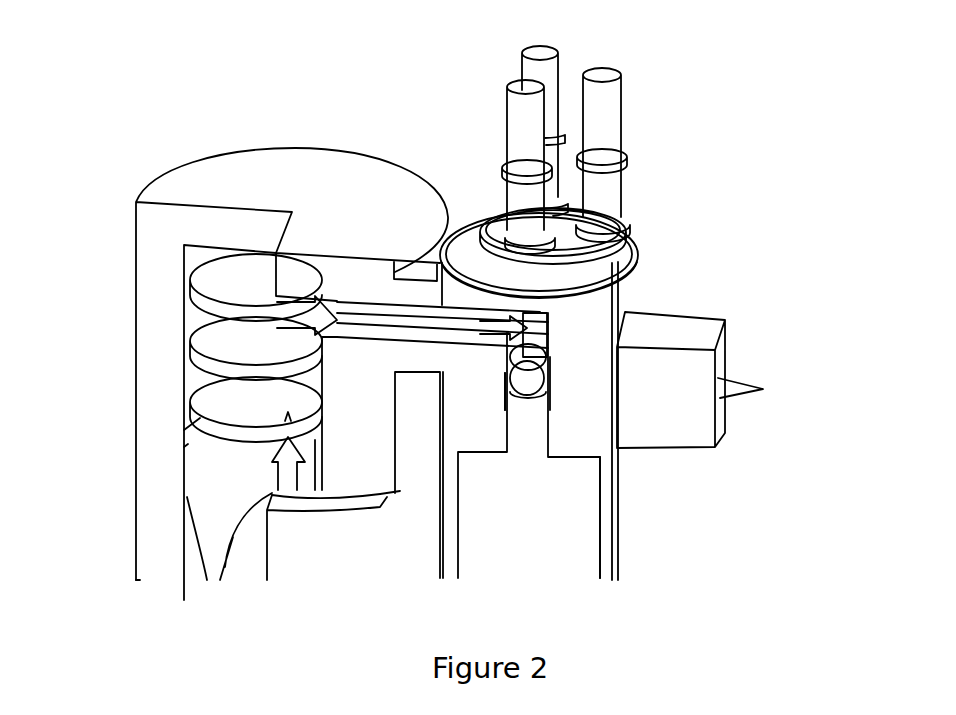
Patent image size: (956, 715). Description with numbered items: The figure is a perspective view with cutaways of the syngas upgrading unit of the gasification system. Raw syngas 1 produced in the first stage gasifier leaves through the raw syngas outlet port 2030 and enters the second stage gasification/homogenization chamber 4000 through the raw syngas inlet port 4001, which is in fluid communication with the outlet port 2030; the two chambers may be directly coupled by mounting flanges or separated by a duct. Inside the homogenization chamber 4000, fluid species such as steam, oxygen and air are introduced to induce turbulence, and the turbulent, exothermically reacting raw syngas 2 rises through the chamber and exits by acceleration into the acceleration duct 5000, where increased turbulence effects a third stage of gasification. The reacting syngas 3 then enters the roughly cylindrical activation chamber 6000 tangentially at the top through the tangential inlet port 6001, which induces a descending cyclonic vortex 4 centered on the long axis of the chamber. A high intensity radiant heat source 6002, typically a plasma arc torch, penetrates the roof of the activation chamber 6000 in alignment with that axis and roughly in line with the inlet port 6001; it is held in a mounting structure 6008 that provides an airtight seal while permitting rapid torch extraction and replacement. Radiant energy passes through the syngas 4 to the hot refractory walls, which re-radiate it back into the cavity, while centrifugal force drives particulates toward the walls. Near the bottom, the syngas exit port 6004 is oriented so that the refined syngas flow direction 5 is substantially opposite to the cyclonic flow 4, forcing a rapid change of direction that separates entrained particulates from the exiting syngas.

The raw syngas 1 is at (302, 459).
The turbulent and exothermically reacting raw syngas 2 is at (217, 434).
The reacting syngas 3 is at (382, 310).
The descending vortex 4 is at (505, 359).
The gas flow direction of refined syngas 5 is at (549, 388).
The raw syngas outlet port 2030 is at (180, 447).
The second stage gasification/homogenization chamber 4000 is at (134, 292).
The raw syngas inlet port 4001 is at (180, 432).
The acceleration duct 5000 is at (378, 343).
The activation chamber 6000 is at (527, 429).
The tangential inlet port 6001 is at (507, 341).
The high intensity radiant heat source 6002 is at (520, 324).
The syngas exit port 6004 is at (724, 410).
The mounting structure 6008 is at (542, 208).